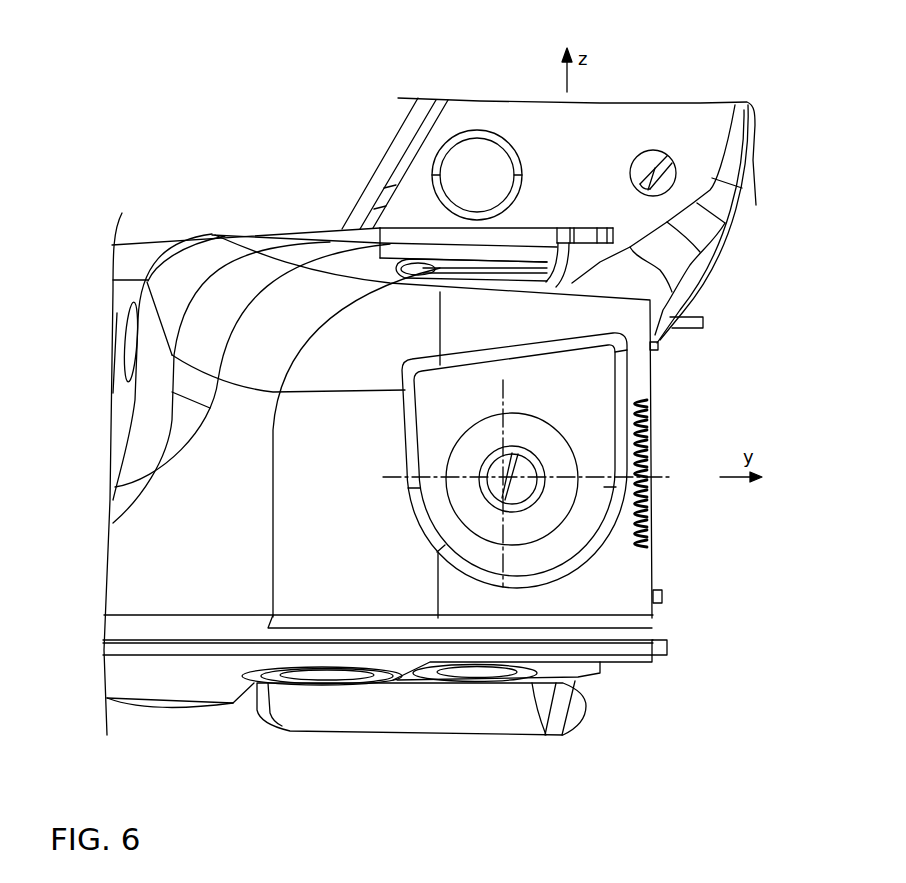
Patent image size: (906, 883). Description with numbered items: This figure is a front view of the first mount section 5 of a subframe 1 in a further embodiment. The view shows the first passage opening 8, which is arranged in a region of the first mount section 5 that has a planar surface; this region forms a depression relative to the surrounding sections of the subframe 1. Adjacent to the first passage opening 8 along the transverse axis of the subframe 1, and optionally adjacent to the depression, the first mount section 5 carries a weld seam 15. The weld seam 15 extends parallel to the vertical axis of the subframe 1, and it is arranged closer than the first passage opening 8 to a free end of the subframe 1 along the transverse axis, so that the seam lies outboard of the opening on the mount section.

The subframe 1 is at (146, 576).
The first mount section 5 is at (535, 748).
The first passage opening 8 is at (518, 465).
The weld seam 15 is at (641, 426).